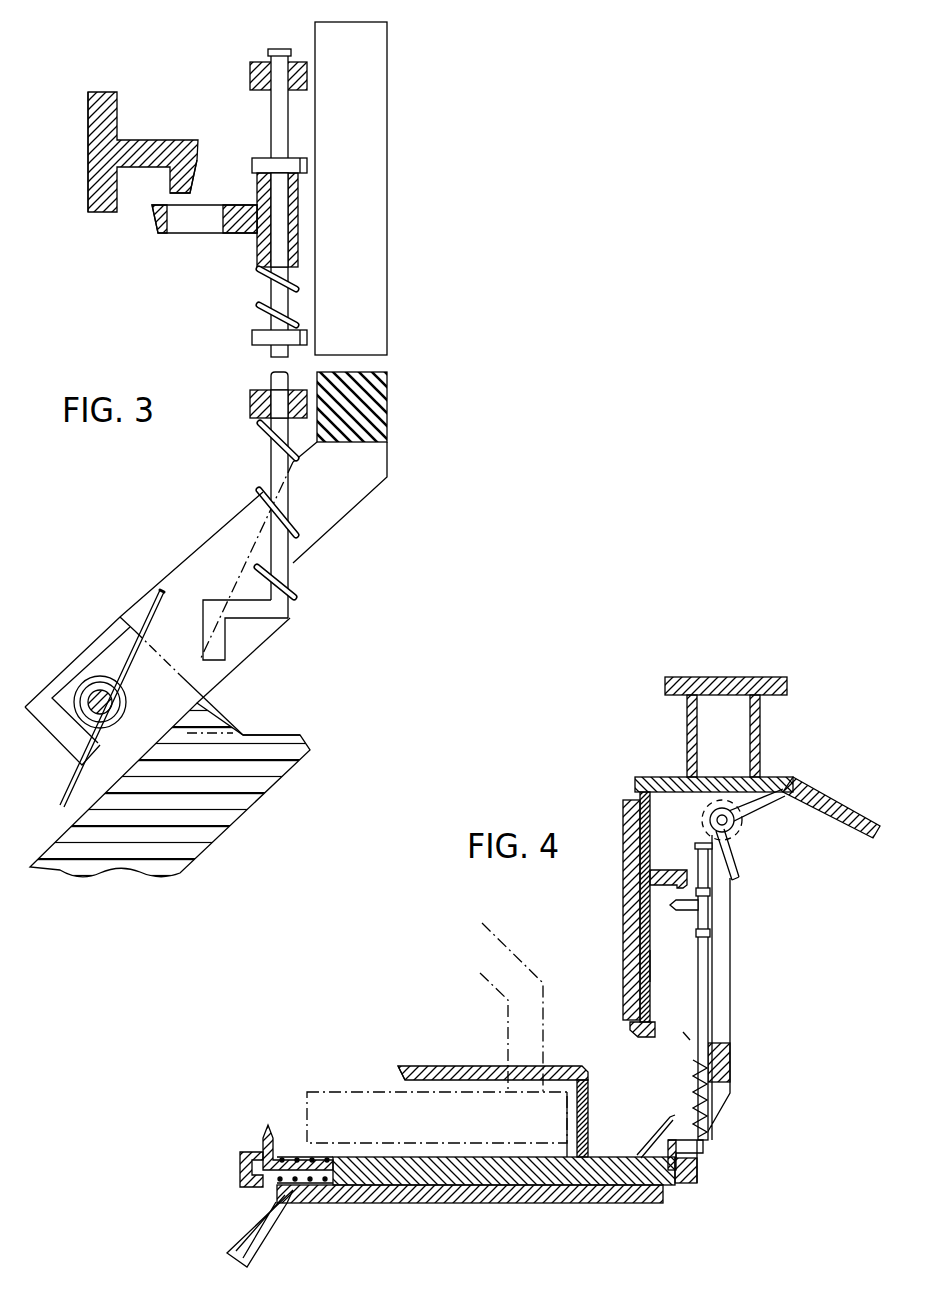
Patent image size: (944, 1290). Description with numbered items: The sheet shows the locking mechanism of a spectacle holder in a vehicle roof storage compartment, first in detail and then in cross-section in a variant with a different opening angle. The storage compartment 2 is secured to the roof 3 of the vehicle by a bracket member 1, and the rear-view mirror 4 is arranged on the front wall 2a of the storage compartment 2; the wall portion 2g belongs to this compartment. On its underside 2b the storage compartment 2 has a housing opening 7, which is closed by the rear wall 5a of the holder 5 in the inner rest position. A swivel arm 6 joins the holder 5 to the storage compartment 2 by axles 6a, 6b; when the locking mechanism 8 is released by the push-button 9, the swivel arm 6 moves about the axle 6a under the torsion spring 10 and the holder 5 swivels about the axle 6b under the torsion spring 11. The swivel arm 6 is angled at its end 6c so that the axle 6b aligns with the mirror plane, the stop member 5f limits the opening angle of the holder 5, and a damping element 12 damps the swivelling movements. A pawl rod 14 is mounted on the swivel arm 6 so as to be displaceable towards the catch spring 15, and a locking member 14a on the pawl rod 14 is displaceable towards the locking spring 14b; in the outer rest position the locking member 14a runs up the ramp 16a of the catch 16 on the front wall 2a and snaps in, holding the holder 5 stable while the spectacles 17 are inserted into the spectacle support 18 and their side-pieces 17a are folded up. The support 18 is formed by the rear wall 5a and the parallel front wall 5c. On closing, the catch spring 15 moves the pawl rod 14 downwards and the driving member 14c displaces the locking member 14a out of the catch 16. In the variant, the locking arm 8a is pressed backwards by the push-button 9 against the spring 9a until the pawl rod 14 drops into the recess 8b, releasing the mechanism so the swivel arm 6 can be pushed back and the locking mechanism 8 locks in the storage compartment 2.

In FIG. 4, the bracket member 1 is at (762, 737).
In FIG. 4, the storage compartment 2 is at (828, 797).
In FIG. 3, the front wall 2a is at (90, 157).
In FIG. 4, the front wall 2a is at (650, 965).
In FIG. 4, the underside 2b is at (643, 1040).
In FIG. 4, the guide wall 2g is at (667, 776).
In FIG. 4, the roof 3 is at (733, 678).
In FIG. 4, the rear-view mirror 4 is at (623, 878).
In FIG. 4, the holder 5 is at (662, 1203).
In FIG. 3, the rear wall 5a is at (222, 822).
In FIG. 4, the rear wall 5a is at (510, 1193).
In FIG. 4, the front wall 5c is at (417, 1073).
In FIG. 3, the stop member 5f is at (280, 735).
In FIG. 4, the stop member 5f is at (700, 1153).
In FIG. 3, the swivel arm 6 is at (364, 288).
In FIG. 4, the swivel arm 6 is at (723, 985).
In FIG. 4, the axle 6a is at (734, 827).
In FIG. 3, the axle 6b is at (98, 700).
In FIG. 3, the angled end 6c is at (197, 560).
In FIG. 4, the housing opening 7 is at (683, 1032).
In FIG. 4, the locking mechanism 8 is at (267, 1132).
In FIG. 4, the locking arm 8a is at (698, 1175).
In FIG. 4, the recess 8b is at (660, 1143).
In FIG. 4, the push-button 9 is at (250, 1185).
In FIG. 4, the spring 9a is at (297, 1153).
In FIG. 4, the torsion spring 10 is at (770, 797).
In FIG. 3, the torsion spring 11 is at (73, 792).
In FIG. 4, the damping element 12 is at (705, 815).
In FIG. 3, the pawl rod 14 is at (270, 114).
In FIG. 4, the pawl rod 14 is at (707, 1023).
In FIG. 3, the locking member 14a is at (243, 233).
In FIG. 4, the locking member 14a is at (680, 910).
In FIG. 3, the locking spring 14b is at (263, 305).
In FIG. 3, the driving member 14c is at (309, 164).
In FIG. 3, the catch spring 15 is at (305, 537).
In FIG. 4, the catch spring 15 is at (720, 1108).
In FIG. 3, the catch 16 is at (163, 150).
In FIG. 4, the catch 16 is at (670, 870).
In FIG. 3, the ramp 16a is at (197, 178).
In FIG. 4, the spectacles 17 is at (363, 1120).
In FIG. 4, the side-pieces 17a is at (490, 965).
In FIG. 4, the spectacle support 18 is at (452, 1083).